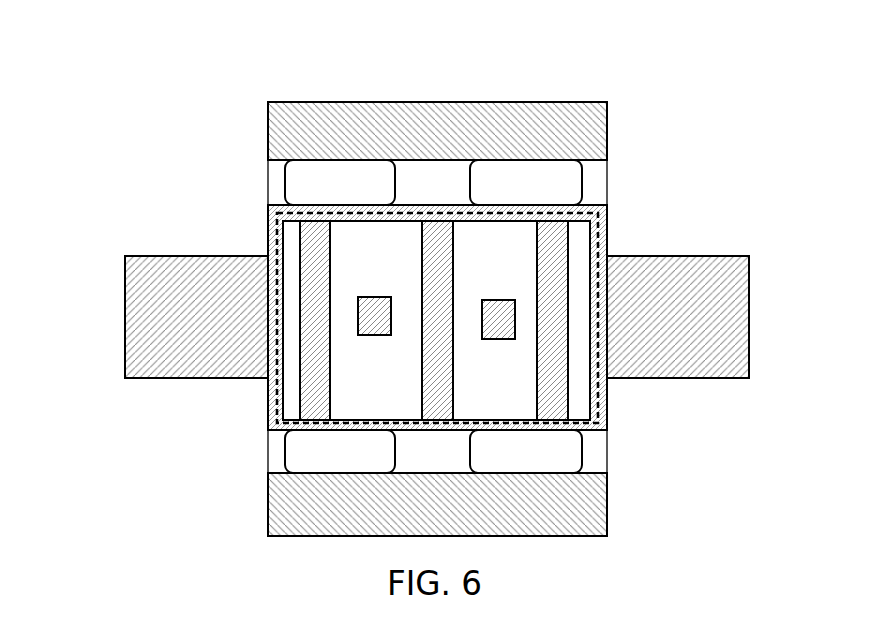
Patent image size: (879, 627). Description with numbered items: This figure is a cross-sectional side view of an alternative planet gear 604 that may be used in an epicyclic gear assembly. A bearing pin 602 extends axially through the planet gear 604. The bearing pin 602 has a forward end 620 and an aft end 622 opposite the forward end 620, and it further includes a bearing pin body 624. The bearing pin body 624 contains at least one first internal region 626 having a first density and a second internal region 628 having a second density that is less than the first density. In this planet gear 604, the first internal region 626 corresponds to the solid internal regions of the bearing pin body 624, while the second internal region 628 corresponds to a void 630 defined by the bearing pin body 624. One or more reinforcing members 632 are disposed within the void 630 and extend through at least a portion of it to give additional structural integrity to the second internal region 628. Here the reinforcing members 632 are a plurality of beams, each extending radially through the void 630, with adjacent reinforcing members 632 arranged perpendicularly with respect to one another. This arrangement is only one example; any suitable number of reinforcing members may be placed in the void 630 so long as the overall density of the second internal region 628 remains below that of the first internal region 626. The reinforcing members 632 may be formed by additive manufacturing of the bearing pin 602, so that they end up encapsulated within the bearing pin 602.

The planet gear 604 is at (270, 52).
The bearing pin 602 is at (103, 428).
The forward end 620 is at (208, 278).
The aft end 622 is at (740, 302).
The bearing pin body 624 is at (668, 318).
The first internal region 626 is at (678, 317).
The second internal region 628 is at (598, 220).
The void 630 is at (503, 232).
The reinforcing members 632 is at (370, 321).